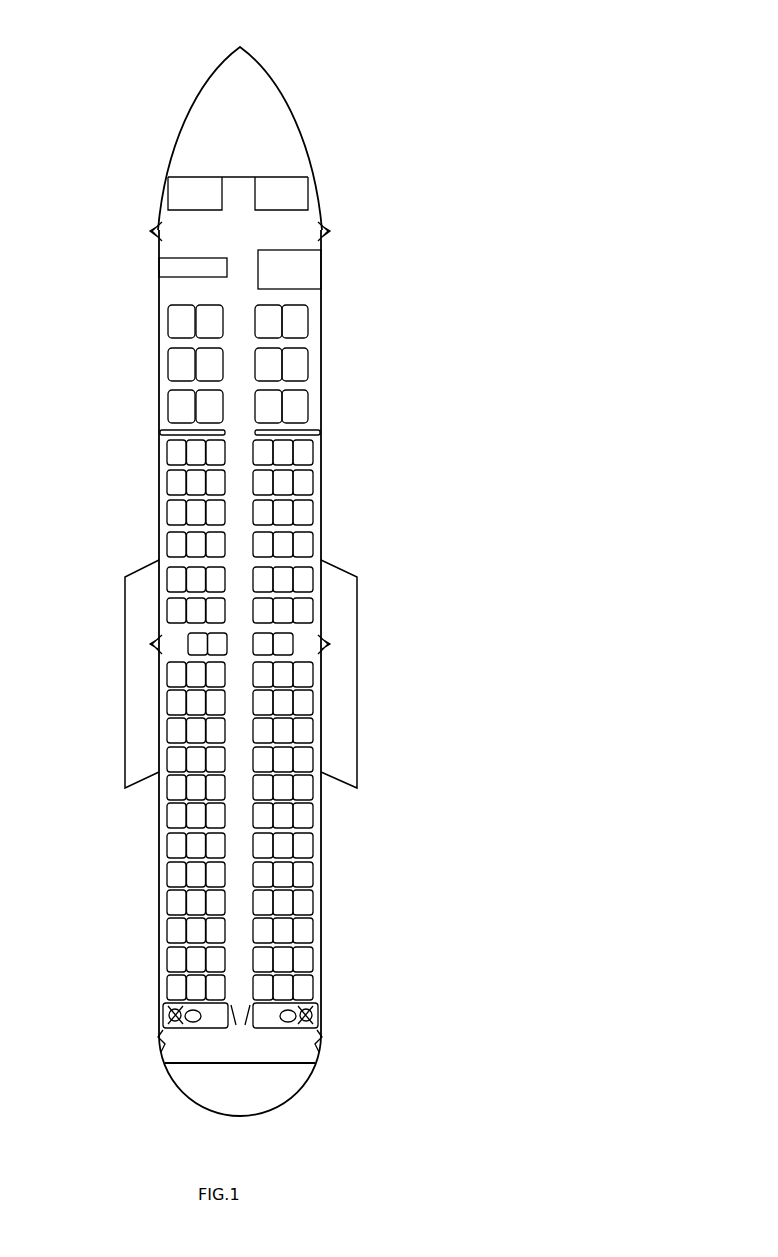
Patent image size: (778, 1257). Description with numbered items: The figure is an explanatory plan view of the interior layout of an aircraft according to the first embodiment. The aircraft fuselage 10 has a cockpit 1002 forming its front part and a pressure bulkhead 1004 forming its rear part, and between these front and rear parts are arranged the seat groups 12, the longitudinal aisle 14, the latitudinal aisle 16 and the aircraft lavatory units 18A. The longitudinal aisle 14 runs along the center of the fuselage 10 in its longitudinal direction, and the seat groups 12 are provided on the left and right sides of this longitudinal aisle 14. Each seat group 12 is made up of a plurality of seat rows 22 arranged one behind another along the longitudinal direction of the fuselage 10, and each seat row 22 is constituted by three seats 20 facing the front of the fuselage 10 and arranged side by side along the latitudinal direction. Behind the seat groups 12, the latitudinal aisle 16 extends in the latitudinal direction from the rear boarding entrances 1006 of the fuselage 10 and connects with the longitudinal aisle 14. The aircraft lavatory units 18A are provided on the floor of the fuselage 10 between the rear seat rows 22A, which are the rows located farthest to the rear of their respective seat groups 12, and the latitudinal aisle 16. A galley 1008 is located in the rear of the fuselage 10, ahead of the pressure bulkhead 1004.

The aircraft fuselage 10 is at (385, 100).
The cockpit 1002 is at (220, 114).
The seat groups 12 is at (163, 487).
The longitudinal aisle 14 is at (242, 530).
The seats 20 is at (177, 806).
The seat rows 22 is at (165, 822).
The rear seat rows 22A is at (165, 990).
The aircraft lavatory units 18A is at (162, 1012).
The rear boarding entrance 1006 is at (160, 1042).
The galley 1008 is at (215, 1075).
The latitudinal aisle 16 is at (245, 1043).
The pressure bulkhead 1004 is at (240, 1116).